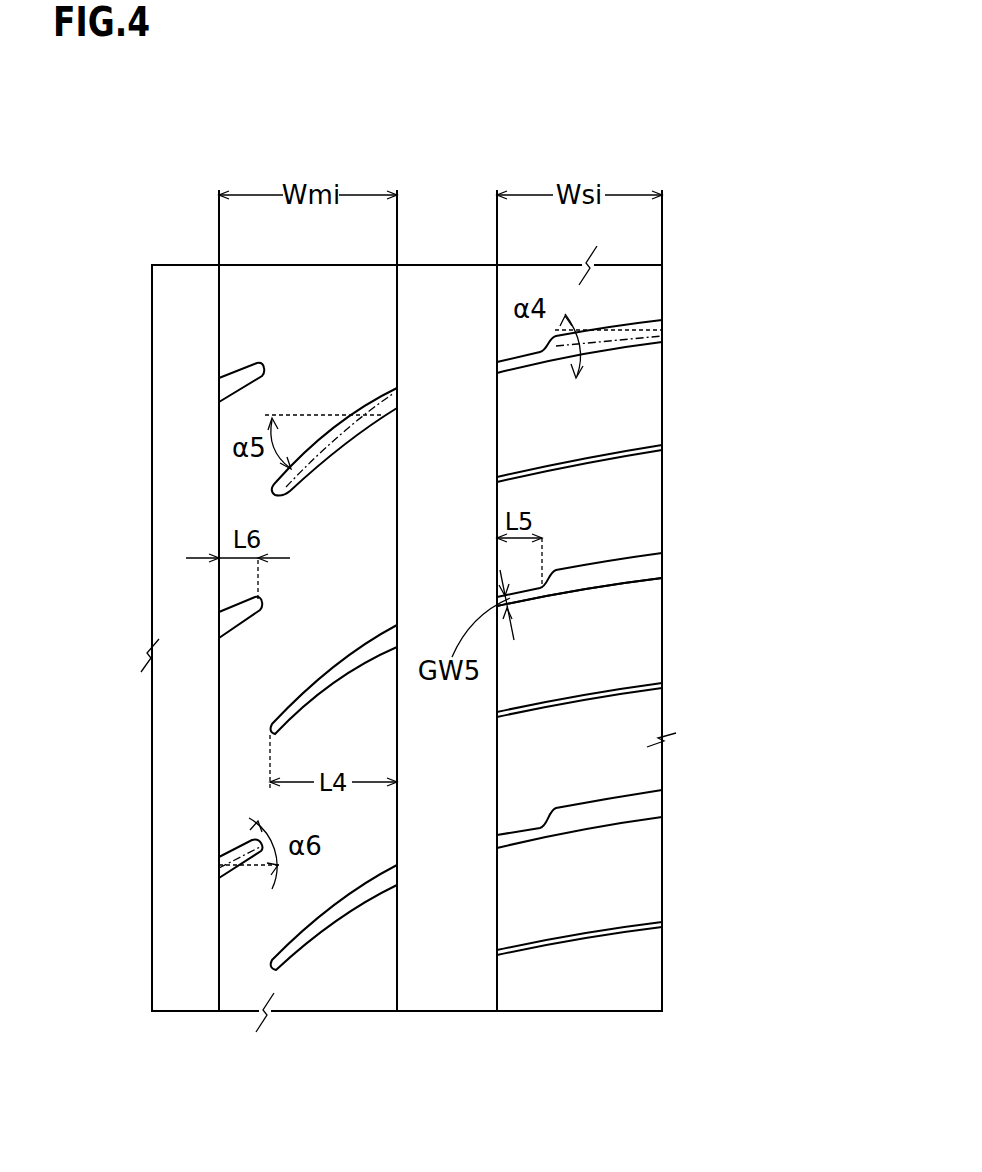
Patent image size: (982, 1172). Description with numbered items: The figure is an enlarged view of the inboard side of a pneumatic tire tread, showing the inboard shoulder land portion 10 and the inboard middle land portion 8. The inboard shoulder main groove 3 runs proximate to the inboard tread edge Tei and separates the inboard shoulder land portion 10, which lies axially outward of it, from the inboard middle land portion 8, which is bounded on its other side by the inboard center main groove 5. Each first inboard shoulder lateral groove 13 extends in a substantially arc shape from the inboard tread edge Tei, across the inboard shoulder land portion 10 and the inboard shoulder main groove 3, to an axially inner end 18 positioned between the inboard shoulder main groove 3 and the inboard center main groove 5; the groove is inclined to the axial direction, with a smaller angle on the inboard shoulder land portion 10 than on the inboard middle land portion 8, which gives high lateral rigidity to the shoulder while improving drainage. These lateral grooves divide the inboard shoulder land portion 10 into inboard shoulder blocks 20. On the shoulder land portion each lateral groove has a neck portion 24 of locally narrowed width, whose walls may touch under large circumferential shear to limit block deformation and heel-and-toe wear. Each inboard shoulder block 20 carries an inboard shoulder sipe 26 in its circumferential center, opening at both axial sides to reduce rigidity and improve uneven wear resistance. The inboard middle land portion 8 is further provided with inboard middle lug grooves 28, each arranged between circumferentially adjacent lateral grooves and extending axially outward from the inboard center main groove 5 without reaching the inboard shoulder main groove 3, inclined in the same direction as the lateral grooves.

The inboard shoulder main groove 3 is at (440, 295).
The inboard center main groove 5 is at (185, 288).
The inboard middle land portion 8 is at (340, 980).
The inboard shoulder land portion 10 is at (568, 985).
The inboard shoulder lateral grooves 13 is at (632, 322).
The axially inner end 18 is at (270, 735).
The inboard shoulder blocks 20 is at (622, 490).
The neck portion 24 is at (528, 605).
The inboard shoulder sipe 26 is at (607, 453).
The inboard middle lug grooves 28 is at (240, 381).
The inboard tread edge Tei is at (662, 375).